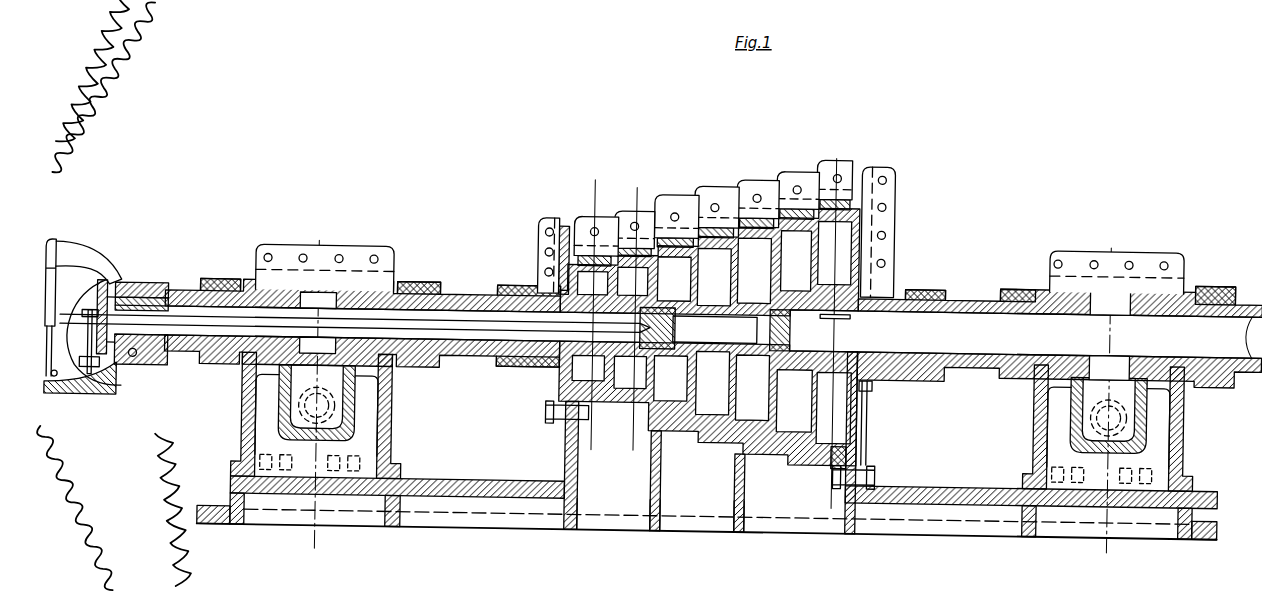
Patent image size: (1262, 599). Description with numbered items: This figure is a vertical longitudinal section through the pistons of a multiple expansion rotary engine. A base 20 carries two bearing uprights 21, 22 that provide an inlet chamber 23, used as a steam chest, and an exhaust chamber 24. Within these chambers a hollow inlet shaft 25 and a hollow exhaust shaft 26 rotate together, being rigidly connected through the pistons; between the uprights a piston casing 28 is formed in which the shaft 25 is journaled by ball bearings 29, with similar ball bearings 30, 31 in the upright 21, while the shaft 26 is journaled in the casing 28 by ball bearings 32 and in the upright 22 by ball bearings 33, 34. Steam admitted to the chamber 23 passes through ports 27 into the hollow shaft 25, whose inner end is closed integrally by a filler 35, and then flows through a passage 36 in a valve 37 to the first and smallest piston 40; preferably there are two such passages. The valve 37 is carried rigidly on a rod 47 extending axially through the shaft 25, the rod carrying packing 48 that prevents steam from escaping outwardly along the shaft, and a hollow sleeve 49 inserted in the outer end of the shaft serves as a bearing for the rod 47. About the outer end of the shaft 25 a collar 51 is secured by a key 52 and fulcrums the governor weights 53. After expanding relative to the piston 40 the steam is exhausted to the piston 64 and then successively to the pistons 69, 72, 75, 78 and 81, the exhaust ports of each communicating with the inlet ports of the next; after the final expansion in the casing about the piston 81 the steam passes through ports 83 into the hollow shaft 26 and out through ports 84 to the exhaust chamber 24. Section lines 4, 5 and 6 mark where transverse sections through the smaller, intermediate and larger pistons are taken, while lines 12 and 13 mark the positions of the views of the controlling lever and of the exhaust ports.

The section line 4— 4 is at (595, 314).
The section line 5 is at (633, 315).
The section line 6— 6 is at (851, 319).
The view line 12 is at (317, 390).
The section line 13— 13 is at (1110, 393).
The base 20 is at (962, 512).
The bearing upright 21 is at (243, 410).
The bearing upright 22 is at (1185, 415).
The inlet chamber 23 is at (356, 395).
The exhaust chamber 24 is at (1072, 398).
The hollow shaft 25 is at (468, 355).
The hollow shaft 26 is at (965, 290).
The ports 27 is at (333, 296).
The piston casing 28 is at (567, 443).
The ball bearings 29 is at (515, 282).
The ball bearings 30 is at (425, 280).
The ball bearings 31 is at (222, 280).
The ball bearings 32 is at (928, 280).
The ball bearings 33 is at (1015, 278).
The ball bearings 34 is at (1210, 278).
The filler 35 is at (702, 330).
The passage 36 is at (578, 260).
The valve 37 is at (530, 365).
The piston 40 is at (612, 262).
The rod 47 is at (458, 318).
The packing 48 is at (275, 290).
The hollow sleeve 49 is at (185, 308).
The collar 51 is at (135, 285).
The key 52 is at (61, 306).
The governor weights 53 is at (62, 243).
The piston 64 is at (650, 245).
The piston 69 is at (690, 235).
The piston 72 is at (733, 225).
The piston 75 is at (770, 215).
The piston 78 is at (805, 200).
The piston 81 is at (862, 200).
The ports 83 is at (840, 310).
The ports 84 is at (1120, 290).